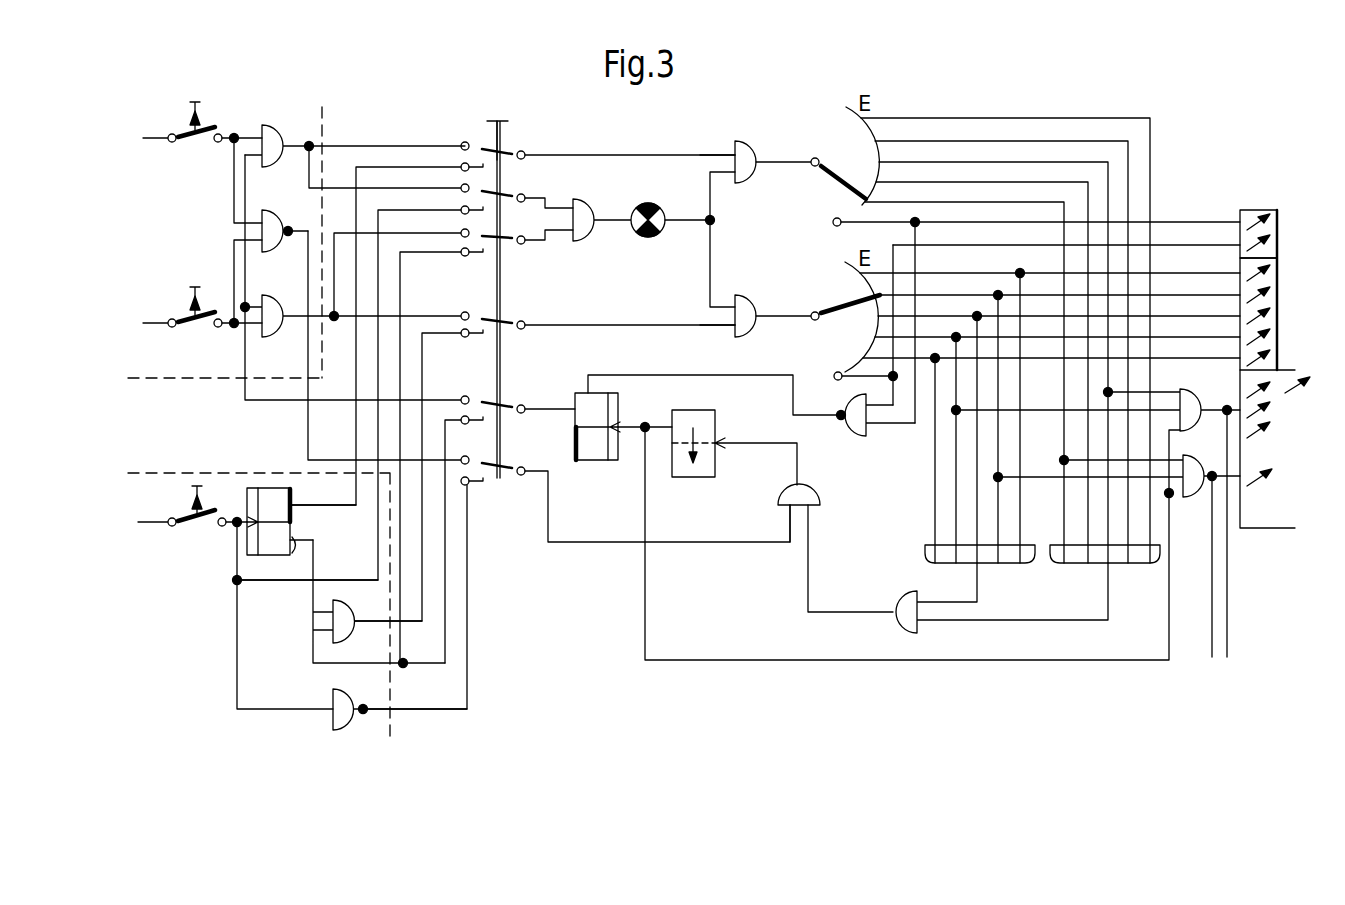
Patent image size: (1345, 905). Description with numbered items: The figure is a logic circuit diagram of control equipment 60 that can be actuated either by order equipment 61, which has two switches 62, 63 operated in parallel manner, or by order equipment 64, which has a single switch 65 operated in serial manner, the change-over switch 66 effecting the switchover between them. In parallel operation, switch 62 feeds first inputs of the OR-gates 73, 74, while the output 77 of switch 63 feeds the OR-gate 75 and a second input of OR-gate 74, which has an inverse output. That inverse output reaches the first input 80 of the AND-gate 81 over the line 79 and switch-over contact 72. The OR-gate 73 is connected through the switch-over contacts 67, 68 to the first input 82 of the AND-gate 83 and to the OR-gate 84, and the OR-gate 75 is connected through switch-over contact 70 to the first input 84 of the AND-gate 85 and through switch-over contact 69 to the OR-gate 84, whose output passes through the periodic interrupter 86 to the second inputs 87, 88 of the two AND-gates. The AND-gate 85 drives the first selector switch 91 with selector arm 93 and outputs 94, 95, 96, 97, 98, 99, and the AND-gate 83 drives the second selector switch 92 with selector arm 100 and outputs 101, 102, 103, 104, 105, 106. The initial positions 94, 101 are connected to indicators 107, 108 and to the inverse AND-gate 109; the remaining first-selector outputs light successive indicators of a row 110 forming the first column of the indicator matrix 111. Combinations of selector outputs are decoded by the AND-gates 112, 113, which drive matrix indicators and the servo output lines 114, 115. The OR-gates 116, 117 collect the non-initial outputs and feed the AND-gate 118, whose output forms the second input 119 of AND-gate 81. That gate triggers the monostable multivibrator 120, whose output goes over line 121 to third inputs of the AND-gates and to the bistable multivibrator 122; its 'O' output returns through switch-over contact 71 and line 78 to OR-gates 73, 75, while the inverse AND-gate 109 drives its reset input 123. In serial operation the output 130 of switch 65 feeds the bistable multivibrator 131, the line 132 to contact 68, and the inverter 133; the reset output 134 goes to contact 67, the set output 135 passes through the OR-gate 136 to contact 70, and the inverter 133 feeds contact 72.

The control equipment 60 is at (457, 114).
The order equipment 61 is at (250, 105).
The switch 62 is at (175, 134).
The switch 63 is at (175, 319).
The order equipment 64 is at (229, 641).
The switch 65 is at (176, 518).
The change-over switch 66 is at (503, 131).
The switch-over contact 67 is at (230, 141).
The switch-over contact 68 is at (508, 198).
The switch-over contact 69 is at (508, 240).
The switch-over contact 70 is at (507, 321).
The switch-over contact 71 is at (508, 404).
The switch-over contact 72 is at (508, 469).
The OR-gate 73 is at (290, 126).
The OR-gate 74 is at (280, 222).
The OR-gate 75 is at (282, 305).
The output 77 is at (231, 328).
The line 78 is at (258, 400).
The line 79 is at (331, 456).
The first input 80 is at (778, 499).
The AND-gate 81 is at (808, 490).
The first input 82 is at (728, 161).
The AND-gate 83 is at (750, 150).
The OR-gate 84 is at (586, 207).
The AND-gate 85 is at (770, 299).
The periodic interrupter 86 is at (651, 203).
The second input 87 is at (726, 176).
The second input 88 is at (725, 278).
The first selector switch 91 is at (784, 305).
The second selector switch 92 is at (783, 153).
The selector arm 93 is at (861, 297).
The output 94 is at (866, 325).
The output 95 is at (1051, 452).
The output 96 is at (1057, 442).
The output 97 is at (1059, 431).
The output 98 is at (1057, 421).
The output 99 is at (1050, 410).
The selector arm 100 is at (856, 183).
The output 101 is at (1036, 315).
The output 102 is at (964, 374).
The output 103 is at (982, 364).
The output 104 is at (993, 353).
The output 105 is at (1001, 343).
The output 106 is at (1005, 333).
The indicator 107 is at (1250, 226).
The indicator 108 is at (1248, 243).
The inverse AND-gate 109 is at (858, 435).
The row of indicators 110 is at (1240, 308).
The rectangular matrix of indicators 111 is at (1258, 528).
The AND-gate 112 is at (1199, 410).
The AND-gate 113 is at (1208, 455).
The output line 114 is at (1228, 608).
The output line 115 is at (1212, 610).
The OR-gate 116 is at (995, 570).
The OR-gate 117 is at (1121, 570).
The AND-gate 118 is at (900, 619).
The second input 119 is at (809, 516).
The monostable multivibrator 120 is at (692, 469).
The line 121 is at (686, 660).
The bistable multivibrator 122 is at (594, 452).
The reset input 123 is at (589, 384).
The output 130 is at (226, 527).
The bistable multivibrator 131 is at (277, 503).
The line 132 is at (340, 574).
The inverter 133 is at (352, 700).
The reset output 134 is at (301, 512).
The set output 135 is at (291, 559).
The OR-gate 136 is at (356, 616).